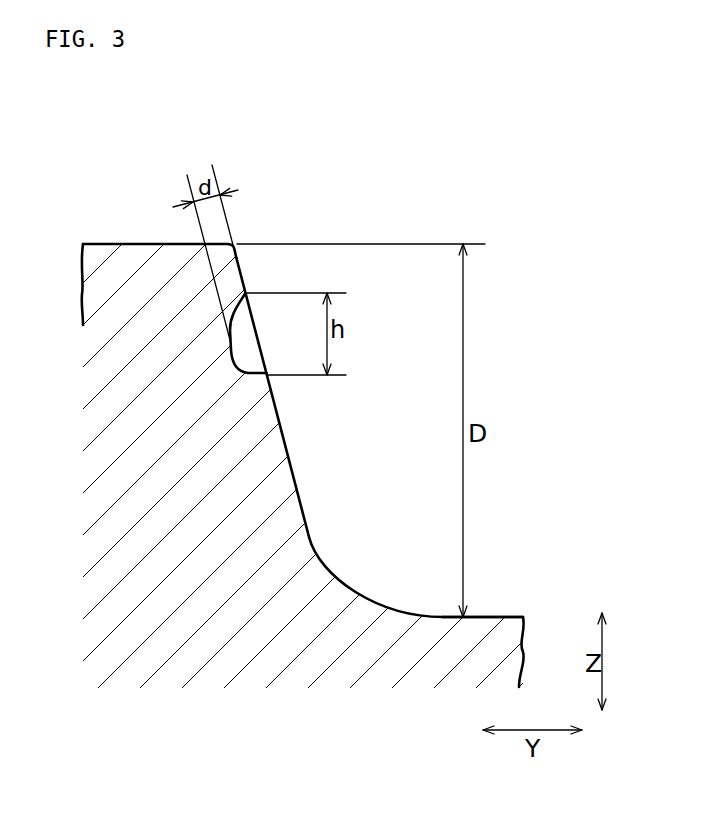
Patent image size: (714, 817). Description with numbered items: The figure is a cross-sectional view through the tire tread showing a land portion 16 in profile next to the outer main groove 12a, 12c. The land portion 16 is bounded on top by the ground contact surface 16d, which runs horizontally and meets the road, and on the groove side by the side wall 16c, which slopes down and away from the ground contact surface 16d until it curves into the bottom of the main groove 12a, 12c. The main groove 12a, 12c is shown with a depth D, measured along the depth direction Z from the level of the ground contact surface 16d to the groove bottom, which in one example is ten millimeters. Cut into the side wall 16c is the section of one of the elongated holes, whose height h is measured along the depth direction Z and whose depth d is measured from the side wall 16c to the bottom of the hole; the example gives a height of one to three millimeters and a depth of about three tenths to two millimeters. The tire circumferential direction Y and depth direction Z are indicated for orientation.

The land portion 16 is at (108, 242).
The ground contact surface 16d is at (144, 244).
The side wall 16c is at (284, 440).
The main groove 12a is at (502, 617).
The main groove 12c is at (525, 581).